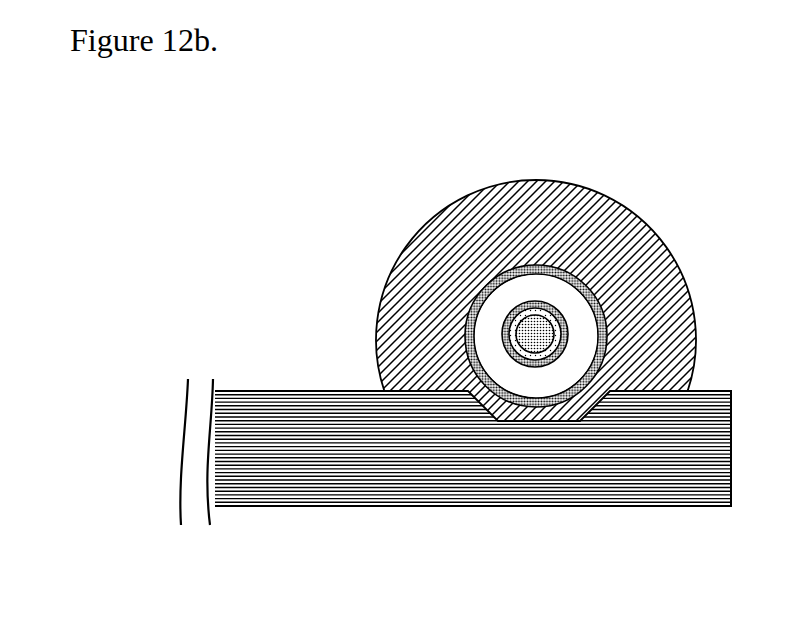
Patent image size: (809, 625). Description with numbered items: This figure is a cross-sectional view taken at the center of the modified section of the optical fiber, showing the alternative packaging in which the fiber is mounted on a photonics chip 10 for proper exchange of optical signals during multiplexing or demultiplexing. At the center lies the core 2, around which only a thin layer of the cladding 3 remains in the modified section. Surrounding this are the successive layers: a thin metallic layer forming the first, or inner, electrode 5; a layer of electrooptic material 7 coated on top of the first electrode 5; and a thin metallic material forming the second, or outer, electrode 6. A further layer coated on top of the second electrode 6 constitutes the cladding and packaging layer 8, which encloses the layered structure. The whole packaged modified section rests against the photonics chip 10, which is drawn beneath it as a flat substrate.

The core 2 is at (521, 321).
The cladding 3 is at (505, 325).
The first electrode 5 is at (540, 298).
The second electrode 6 is at (458, 333).
The electrooptic material 7 is at (546, 370).
The cladding and packaging layer 8 is at (685, 320).
The photonics chip 10 is at (487, 465).